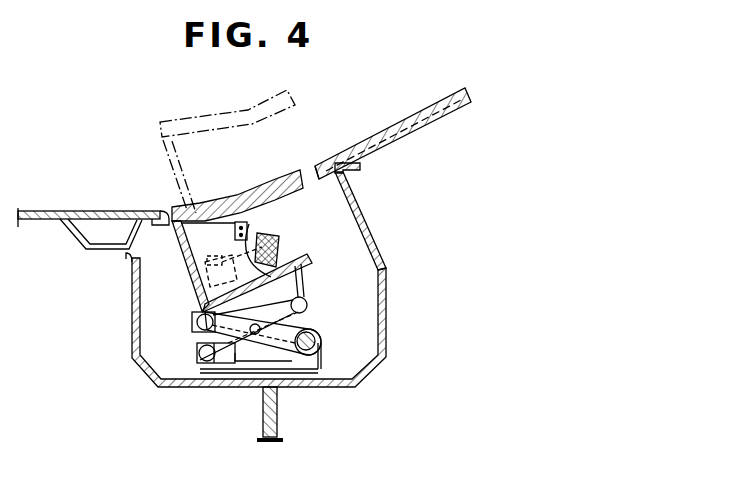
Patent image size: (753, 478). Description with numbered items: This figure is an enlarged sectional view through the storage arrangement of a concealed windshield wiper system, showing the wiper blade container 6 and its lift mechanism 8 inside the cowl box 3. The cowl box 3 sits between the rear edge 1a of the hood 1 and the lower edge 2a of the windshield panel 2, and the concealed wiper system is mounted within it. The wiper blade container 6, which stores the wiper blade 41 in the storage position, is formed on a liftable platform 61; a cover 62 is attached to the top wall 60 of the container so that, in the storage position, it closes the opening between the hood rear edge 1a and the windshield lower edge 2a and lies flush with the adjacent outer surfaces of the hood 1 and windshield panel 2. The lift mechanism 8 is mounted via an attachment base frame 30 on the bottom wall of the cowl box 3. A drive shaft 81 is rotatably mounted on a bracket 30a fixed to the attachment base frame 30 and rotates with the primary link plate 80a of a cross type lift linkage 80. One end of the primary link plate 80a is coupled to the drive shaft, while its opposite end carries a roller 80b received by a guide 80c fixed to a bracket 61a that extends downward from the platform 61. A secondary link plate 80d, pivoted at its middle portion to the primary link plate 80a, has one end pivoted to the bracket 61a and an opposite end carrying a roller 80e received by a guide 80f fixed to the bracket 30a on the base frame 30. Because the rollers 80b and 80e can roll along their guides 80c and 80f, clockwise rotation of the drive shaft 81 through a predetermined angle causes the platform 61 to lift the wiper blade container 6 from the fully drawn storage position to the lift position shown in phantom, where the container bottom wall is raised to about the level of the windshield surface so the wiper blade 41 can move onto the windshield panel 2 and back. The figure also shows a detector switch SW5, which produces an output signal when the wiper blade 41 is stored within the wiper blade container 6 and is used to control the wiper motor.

The hood 1 is at (97, 211).
The rear edge of hood 1a is at (164, 211).
The windshield panel 2 is at (415, 113).
The lower edge of windshield panel 2a is at (311, 167).
The cowl box 3 is at (142, 368).
The wiper blade container 6 is at (310, 248).
The lift mechanism 8 is at (328, 316).
The attachment base frame 30 is at (188, 387).
The bracket 30a is at (296, 369).
The wiper blade 41 is at (280, 243).
The top wall of wiper blade container 60 is at (303, 190).
The liftable platform 61 is at (312, 266).
The bracket 61a is at (308, 286).
The cover 62 is at (300, 171).
The cross type lift linkage 80 is at (233, 348).
The primary link plate 80a is at (314, 328).
The roller 80b is at (195, 323).
The guide 80c is at (193, 321).
The secondary link plate 80d is at (255, 374).
The roller 80e is at (198, 362).
The guide 80f is at (197, 350).
The drive shaft 81 is at (321, 350).
The detector switch SW5 is at (235, 228).